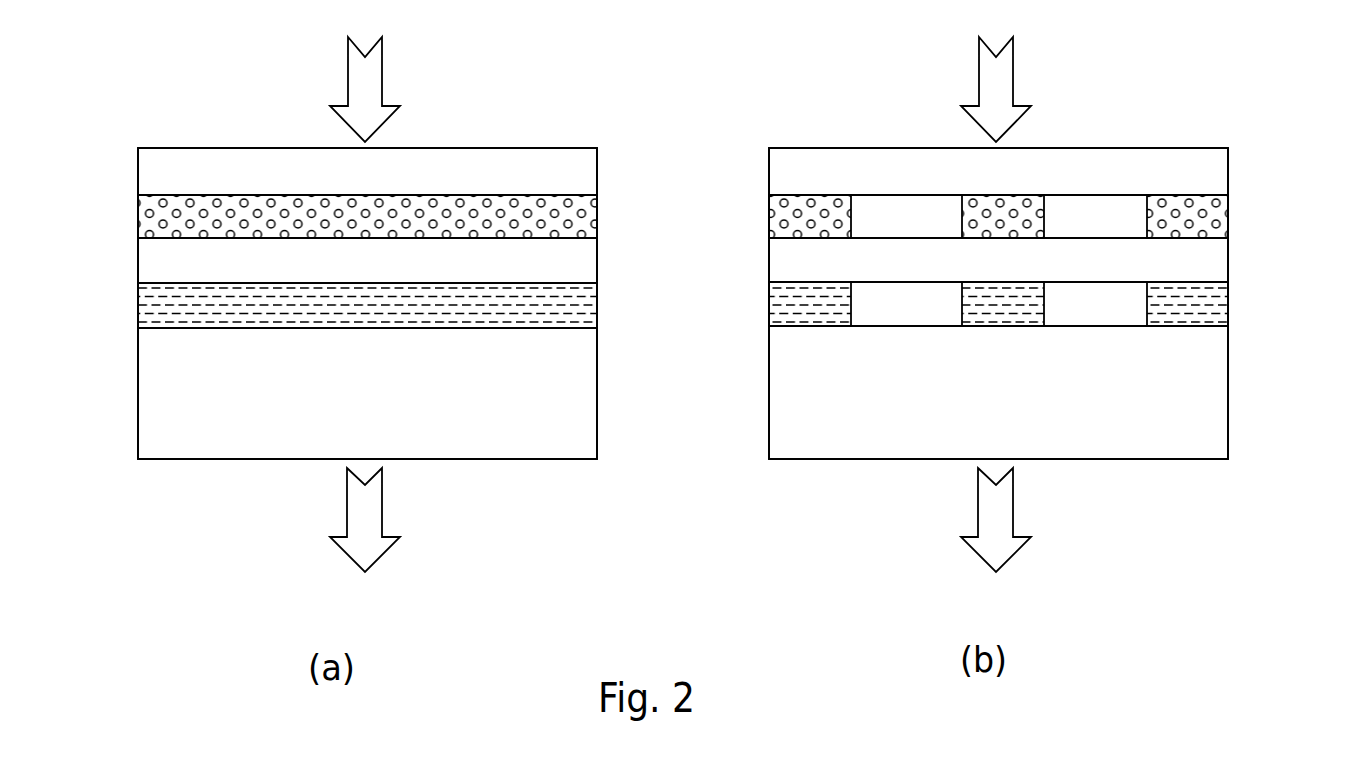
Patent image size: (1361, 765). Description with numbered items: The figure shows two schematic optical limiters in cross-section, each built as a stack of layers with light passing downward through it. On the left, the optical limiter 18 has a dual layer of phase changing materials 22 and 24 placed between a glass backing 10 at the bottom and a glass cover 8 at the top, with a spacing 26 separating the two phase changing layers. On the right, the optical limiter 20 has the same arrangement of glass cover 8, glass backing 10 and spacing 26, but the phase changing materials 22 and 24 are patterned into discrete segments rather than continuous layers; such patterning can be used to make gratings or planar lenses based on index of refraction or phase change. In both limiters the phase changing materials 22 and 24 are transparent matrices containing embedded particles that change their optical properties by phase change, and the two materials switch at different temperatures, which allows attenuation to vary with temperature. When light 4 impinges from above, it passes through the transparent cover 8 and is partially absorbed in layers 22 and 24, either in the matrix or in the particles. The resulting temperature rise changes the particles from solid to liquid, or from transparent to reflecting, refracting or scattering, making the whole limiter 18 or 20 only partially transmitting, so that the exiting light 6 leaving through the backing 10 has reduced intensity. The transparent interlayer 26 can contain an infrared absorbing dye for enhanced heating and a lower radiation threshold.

The impinging light 4 is at (680, 89).
The exiting light 6 is at (680, 520).
The glass cover 8 is at (168, 157).
The glass backing 10 is at (213, 443).
The optical limiter 18 is at (612, 145).
The optical limiter 20 is at (1242, 145).
The phase changing material 22 is at (148, 238).
The phase changing material 24 is at (147, 318).
The spacing 26 is at (590, 258).